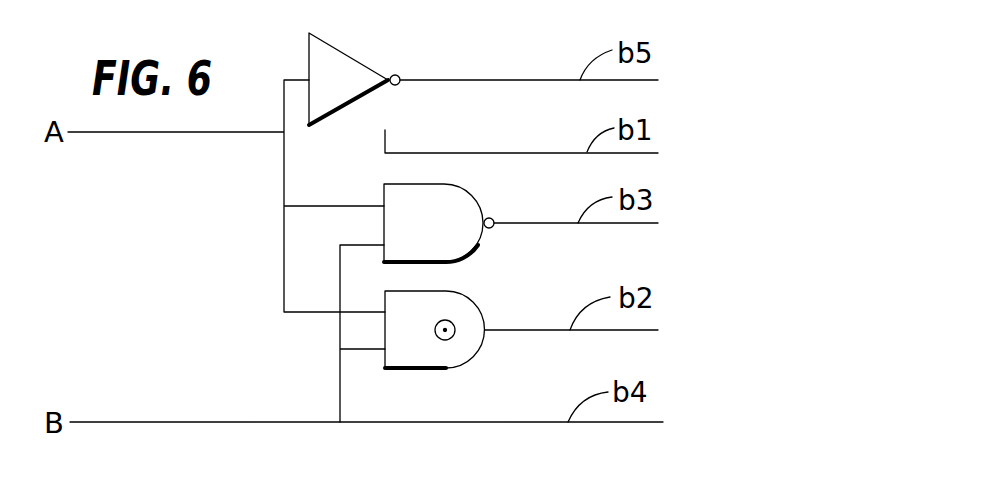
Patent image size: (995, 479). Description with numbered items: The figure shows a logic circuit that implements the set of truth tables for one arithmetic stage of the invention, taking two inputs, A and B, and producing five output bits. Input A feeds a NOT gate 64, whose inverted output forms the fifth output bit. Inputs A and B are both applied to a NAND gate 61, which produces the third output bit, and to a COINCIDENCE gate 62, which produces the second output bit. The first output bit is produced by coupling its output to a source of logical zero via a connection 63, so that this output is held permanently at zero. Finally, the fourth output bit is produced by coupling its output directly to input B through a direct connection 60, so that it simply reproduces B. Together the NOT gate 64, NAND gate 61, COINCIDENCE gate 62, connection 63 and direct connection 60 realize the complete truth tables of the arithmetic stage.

The direct connection 60 is at (480, 423).
The NAND gate 61 is at (480, 240).
The COINCIDENCE gate 62 is at (485, 350).
The connection 63 is at (475, 152).
The NOT gate 64 is at (345, 73).